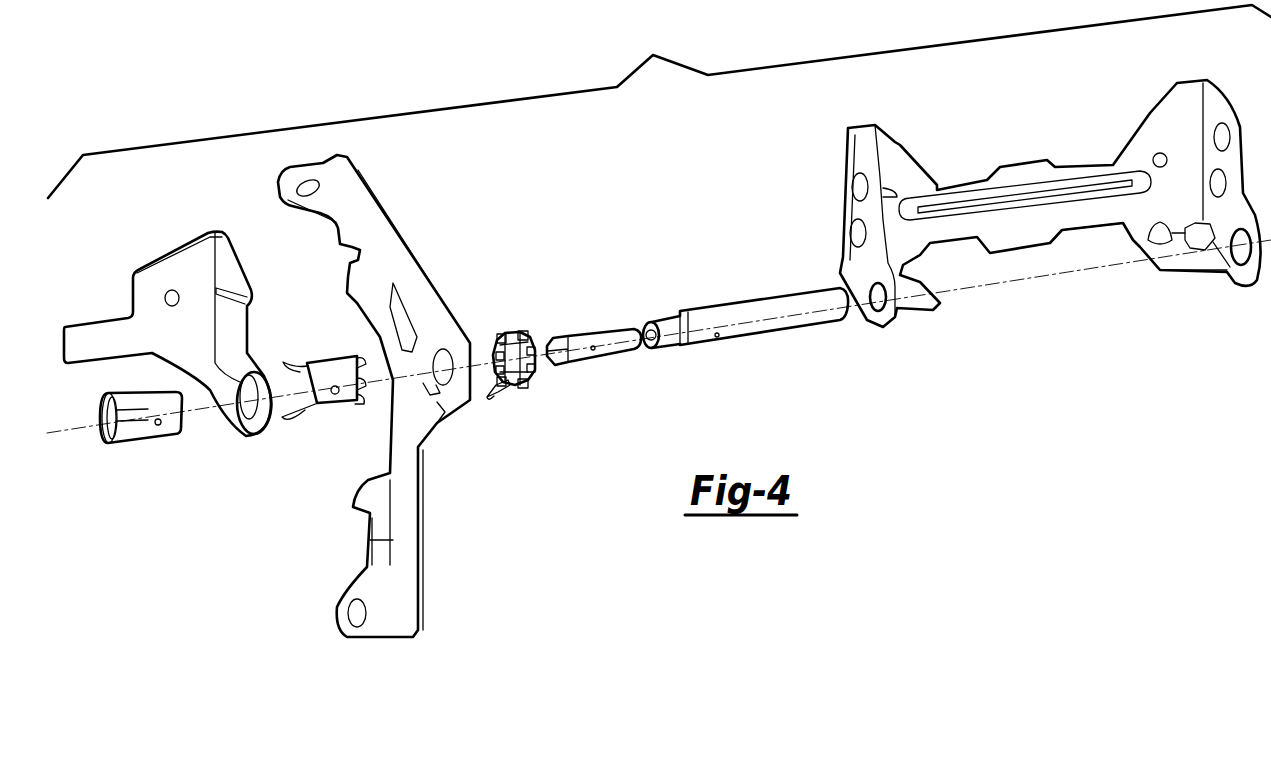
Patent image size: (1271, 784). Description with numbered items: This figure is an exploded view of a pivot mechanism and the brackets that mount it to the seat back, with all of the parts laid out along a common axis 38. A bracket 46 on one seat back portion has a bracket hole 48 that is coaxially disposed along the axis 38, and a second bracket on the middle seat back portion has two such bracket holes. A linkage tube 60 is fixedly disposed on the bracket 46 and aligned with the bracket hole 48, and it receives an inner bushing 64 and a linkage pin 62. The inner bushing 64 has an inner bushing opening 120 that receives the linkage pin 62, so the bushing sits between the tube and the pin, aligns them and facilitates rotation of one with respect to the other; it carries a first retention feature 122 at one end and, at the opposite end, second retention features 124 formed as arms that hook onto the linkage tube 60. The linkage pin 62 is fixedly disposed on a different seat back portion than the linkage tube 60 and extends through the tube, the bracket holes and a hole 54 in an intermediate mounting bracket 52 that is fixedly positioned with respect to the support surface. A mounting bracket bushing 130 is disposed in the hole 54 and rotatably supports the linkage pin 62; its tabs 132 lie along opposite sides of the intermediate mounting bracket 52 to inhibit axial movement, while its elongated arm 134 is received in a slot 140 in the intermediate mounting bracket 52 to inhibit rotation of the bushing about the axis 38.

The axis 38 is at (1065, 270).
The bracket 46 is at (167, 330).
The bracket hole 48 is at (235, 420).
The intermediate mounting bracket 52 is at (378, 396).
The hole 54 is at (440, 350).
The linkage tube 60 is at (158, 440).
The linkage pin 62 is at (767, 303).
The inner bushing 64 is at (317, 371).
The inner bushing opening 120 is at (298, 383).
The first retention feature 122 is at (370, 405).
The second retention feature 124 is at (285, 358).
The mounting bracket bushing 130 is at (536, 344).
The tabs 132 is at (520, 385).
The elongated arm 134 is at (490, 395).
The slot 140 is at (437, 423).